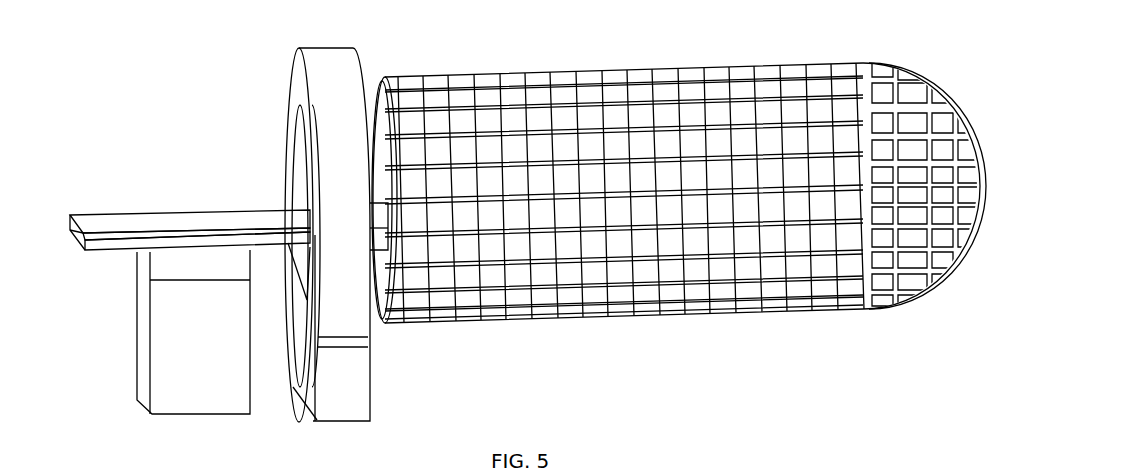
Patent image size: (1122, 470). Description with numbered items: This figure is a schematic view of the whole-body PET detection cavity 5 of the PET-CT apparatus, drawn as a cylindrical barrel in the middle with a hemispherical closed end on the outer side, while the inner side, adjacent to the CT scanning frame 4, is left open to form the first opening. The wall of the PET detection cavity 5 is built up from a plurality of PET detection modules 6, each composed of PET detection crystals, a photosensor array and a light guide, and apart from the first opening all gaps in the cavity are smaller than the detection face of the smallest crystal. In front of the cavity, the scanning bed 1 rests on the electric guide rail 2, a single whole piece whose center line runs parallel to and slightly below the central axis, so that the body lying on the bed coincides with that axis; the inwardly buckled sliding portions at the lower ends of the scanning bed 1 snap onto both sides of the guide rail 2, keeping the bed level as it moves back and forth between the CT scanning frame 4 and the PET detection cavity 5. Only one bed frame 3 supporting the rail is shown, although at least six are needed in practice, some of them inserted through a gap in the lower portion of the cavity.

The scanning bed 1 is at (177, 222).
The electric guide rail 2 is at (102, 243).
The bed frame 3 is at (225, 360).
The CT scanning frame 4 is at (357, 325).
The PET detection cavity 5 is at (597, 293).
The PET detection module 6 is at (745, 303).